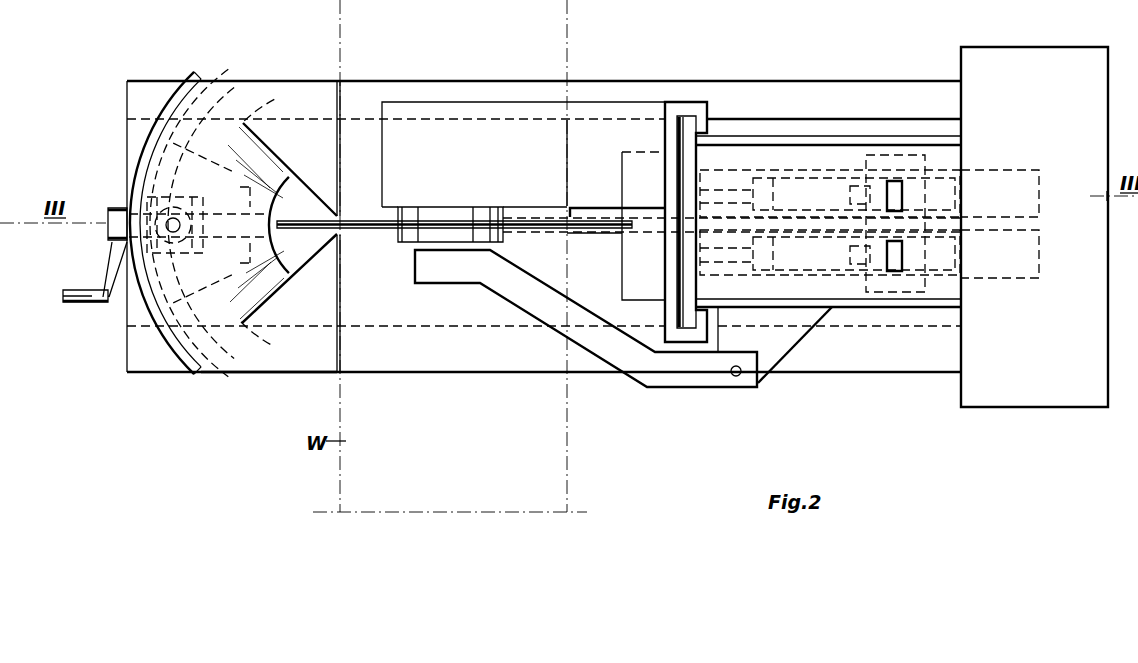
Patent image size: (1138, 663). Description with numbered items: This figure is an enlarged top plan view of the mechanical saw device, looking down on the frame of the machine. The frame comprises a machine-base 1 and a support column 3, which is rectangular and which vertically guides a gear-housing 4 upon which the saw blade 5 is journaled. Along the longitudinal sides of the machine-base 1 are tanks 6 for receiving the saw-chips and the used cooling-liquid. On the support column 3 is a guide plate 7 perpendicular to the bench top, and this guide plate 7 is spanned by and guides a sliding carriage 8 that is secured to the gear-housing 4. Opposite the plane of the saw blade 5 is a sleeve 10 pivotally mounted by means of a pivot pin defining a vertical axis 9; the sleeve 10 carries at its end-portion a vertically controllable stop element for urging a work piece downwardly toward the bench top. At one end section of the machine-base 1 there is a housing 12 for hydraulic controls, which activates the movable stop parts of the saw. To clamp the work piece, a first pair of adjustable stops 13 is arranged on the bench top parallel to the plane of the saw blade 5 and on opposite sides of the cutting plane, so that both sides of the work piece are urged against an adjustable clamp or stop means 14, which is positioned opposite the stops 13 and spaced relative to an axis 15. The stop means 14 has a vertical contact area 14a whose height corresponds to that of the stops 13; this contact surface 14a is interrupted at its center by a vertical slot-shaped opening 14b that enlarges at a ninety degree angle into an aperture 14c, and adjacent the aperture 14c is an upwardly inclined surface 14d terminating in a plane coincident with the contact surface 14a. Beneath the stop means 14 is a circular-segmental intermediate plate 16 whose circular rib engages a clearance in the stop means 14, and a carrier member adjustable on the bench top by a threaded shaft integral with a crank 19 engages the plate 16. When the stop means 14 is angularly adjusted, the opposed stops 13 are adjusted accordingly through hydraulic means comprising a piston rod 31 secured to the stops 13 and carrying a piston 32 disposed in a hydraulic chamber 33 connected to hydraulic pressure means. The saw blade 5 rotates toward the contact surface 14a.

The machine-base 1 is at (403, 322).
The support column 3 is at (798, 303).
The gear-housing 4 is at (585, 125).
The saw blade 5 is at (561, 224).
The tanks 6 is at (741, 95).
The guide plate 7 is at (695, 128).
The sliding carriage 8 is at (668, 135).
The vertical axis 9 is at (733, 378).
The sleeve 10 is at (506, 293).
The housing 12 is at (1017, 400).
The adjustable stops 13 is at (572, 205).
The stop means 14 is at (203, 362).
The vertical contact area 14a is at (335, 345).
The slot-shaped opening 14b is at (341, 222).
The aperture 14c is at (289, 255).
The inclined surface 14d is at (262, 158).
The axis 15 is at (451, 165).
The intermediate plate 16 is at (172, 170).
The crank 19 is at (89, 303).
The piston rod 31 is at (808, 258).
The piston 32 is at (912, 266).
The hydraulic chamber 33 is at (748, 140).